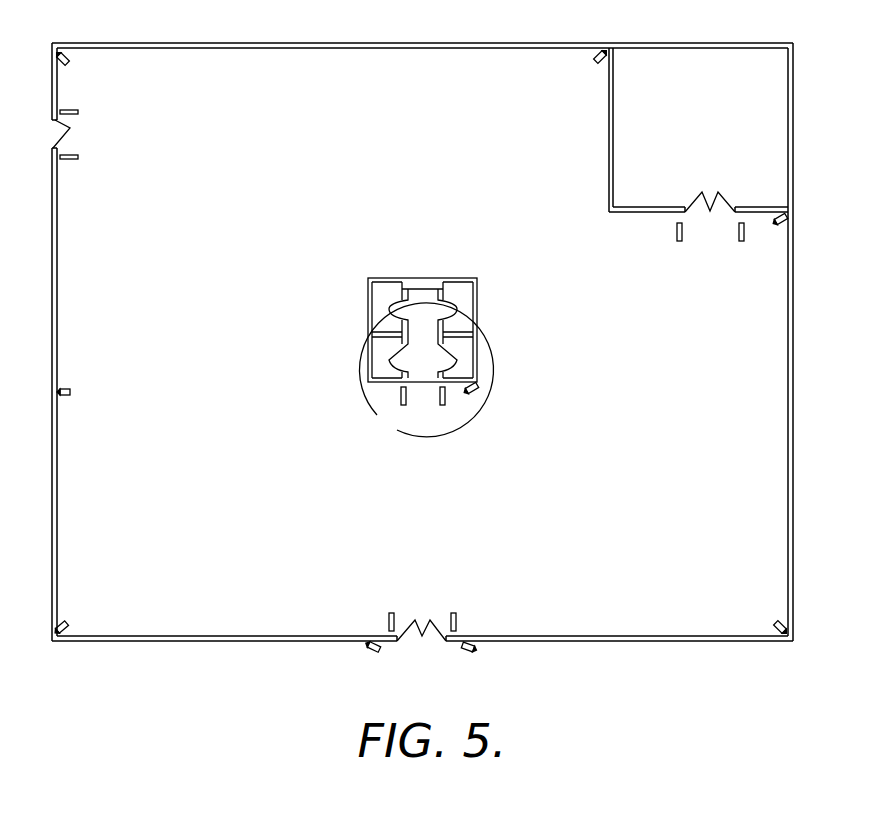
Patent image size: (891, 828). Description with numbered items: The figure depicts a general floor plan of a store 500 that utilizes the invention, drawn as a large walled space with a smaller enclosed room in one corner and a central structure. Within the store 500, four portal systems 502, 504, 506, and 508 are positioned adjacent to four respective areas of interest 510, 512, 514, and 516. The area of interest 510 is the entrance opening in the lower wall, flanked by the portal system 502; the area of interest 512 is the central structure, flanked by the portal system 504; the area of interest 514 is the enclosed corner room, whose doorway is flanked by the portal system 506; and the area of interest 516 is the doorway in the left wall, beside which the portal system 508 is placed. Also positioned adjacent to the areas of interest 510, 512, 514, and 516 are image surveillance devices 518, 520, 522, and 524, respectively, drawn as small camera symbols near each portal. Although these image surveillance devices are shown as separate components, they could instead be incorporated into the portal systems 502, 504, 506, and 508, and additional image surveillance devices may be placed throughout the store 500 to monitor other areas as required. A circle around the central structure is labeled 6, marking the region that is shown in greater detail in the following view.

The store 500 is at (824, 152).
The portal system 502 is at (457, 620).
The portal system 504 is at (447, 400).
The portal system 506 is at (676, 233).
The portal system 508 is at (70, 159).
The area of interest 510 is at (407, 668).
The area of interest 512 is at (424, 396).
The area of interest 514 is at (696, 186).
The area of interest 516 is at (73, 136).
The image surveillance device 518 is at (474, 651).
The image surveillance device 520 is at (480, 387).
The image surveillance device 522 is at (781, 224).
The image surveillance device 524 is at (71, 61).
The detail view reference to FIG. 6 is at (377, 415).